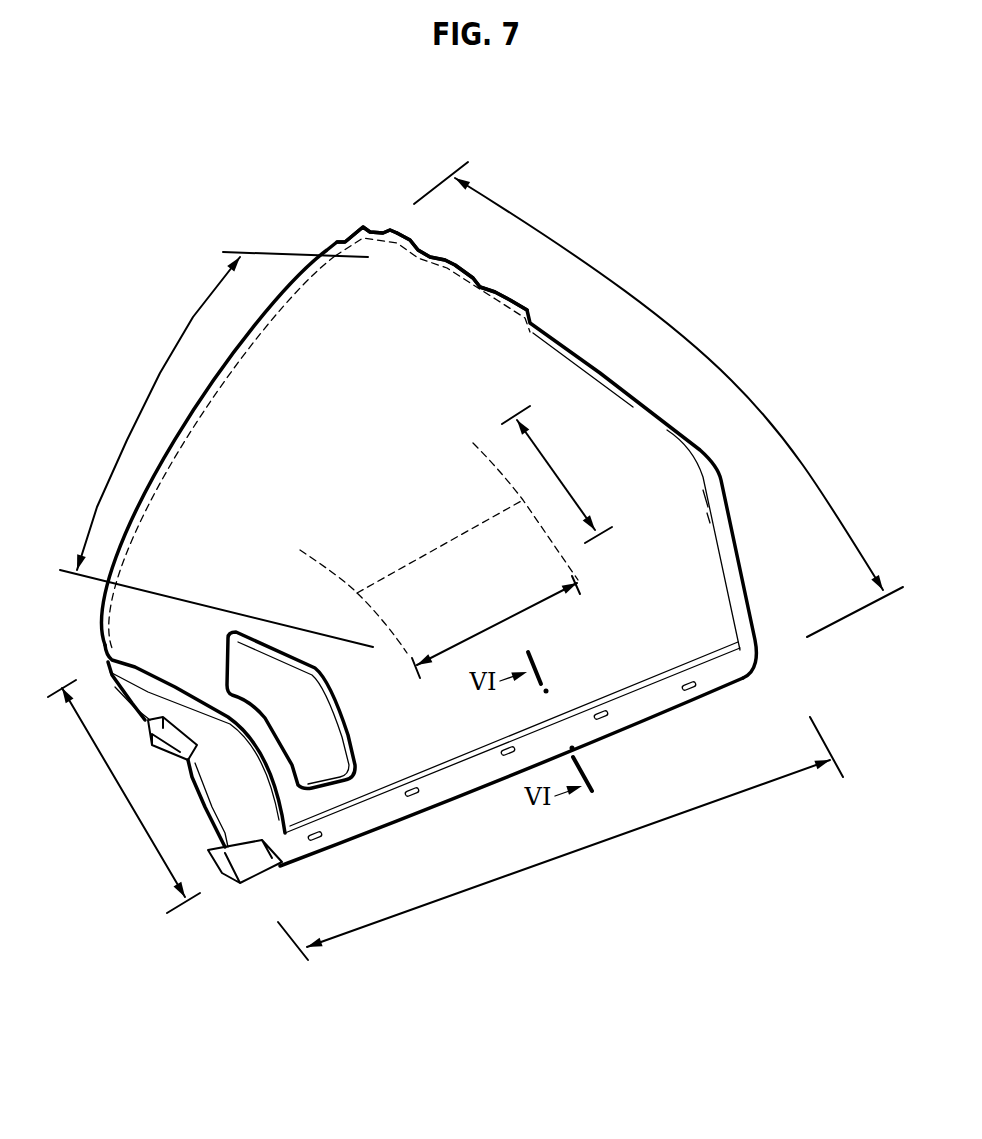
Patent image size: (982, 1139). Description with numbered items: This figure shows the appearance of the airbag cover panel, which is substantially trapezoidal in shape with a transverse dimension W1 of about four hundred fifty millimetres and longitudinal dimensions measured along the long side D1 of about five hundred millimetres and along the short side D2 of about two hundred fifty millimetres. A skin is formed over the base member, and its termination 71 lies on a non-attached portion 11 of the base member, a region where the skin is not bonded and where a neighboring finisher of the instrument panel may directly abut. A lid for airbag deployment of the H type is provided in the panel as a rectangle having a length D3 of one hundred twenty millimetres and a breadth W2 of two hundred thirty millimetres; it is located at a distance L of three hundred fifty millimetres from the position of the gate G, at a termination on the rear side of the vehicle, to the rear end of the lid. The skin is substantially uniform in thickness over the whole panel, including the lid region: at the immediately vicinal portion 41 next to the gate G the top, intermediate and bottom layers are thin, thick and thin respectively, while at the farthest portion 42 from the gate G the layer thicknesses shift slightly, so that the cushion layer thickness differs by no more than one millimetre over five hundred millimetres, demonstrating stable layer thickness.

The non-attached portion 11 is at (647, 700).
The immediately vicinal portion 41 is at (423, 283).
The farthest portion 42 is at (380, 767).
The termination 71 is at (330, 753).
The gate G is at (396, 234).
The distance L is at (216, 449).
The long side D1 is at (658, 399).
The short side D2 is at (124, 796).
The length D3 is at (557, 474).
The first width W1 is at (560, 838).
The breadth W2 is at (496, 627).